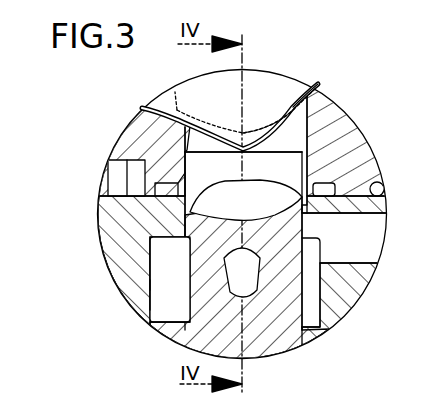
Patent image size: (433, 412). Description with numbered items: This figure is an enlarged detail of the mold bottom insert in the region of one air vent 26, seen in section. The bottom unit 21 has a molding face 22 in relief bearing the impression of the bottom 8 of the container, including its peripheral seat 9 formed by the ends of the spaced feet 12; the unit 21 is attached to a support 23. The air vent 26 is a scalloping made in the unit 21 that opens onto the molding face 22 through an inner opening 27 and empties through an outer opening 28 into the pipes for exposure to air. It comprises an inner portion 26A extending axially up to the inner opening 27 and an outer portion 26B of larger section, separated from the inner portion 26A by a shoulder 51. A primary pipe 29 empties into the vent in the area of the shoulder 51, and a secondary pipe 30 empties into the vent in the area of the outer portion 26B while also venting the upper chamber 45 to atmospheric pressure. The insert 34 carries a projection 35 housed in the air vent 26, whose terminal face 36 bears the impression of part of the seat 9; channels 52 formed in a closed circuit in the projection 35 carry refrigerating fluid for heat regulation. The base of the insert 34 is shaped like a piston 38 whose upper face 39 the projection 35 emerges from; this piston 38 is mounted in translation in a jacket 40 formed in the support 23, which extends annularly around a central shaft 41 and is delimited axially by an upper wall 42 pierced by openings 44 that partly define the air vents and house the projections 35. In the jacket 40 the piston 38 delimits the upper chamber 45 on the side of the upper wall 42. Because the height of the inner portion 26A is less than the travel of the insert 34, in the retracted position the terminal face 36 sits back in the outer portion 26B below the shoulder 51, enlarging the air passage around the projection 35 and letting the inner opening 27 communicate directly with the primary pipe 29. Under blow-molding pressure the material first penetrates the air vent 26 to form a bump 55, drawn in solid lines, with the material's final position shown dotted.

The bottom 8 is at (151, 112).
The peripheral seat 9 is at (257, 129).
The feet 12 is at (235, 127).
The bottom unit 21 is at (139, 123).
The molding face 22 is at (307, 86).
The support 23 is at (106, 234).
The air vent 26 is at (110, 158).
The inner portion of the air vent 26A is at (193, 135).
The outer portion of the air vent 26B is at (186, 172).
The inner opening 27 is at (192, 116).
The outer opening 28 is at (309, 160).
The primary pipe 29 is at (346, 142).
The secondary pipe 30 is at (368, 233).
The insert 34 is at (291, 344).
The projection 35 is at (289, 293).
The terminal face 36 is at (273, 210).
The piston 38 is at (162, 329).
The upper face 39 is at (184, 316).
The jacket 40 is at (148, 294).
The central shaft 41 is at (111, 263).
The upper wall 42 is at (156, 240).
The openings 44 is at (177, 208).
The upper chamber 45 is at (180, 286).
The shoulder 51 is at (193, 153).
The channels 52 is at (233, 256).
The bump 55 is at (268, 153).